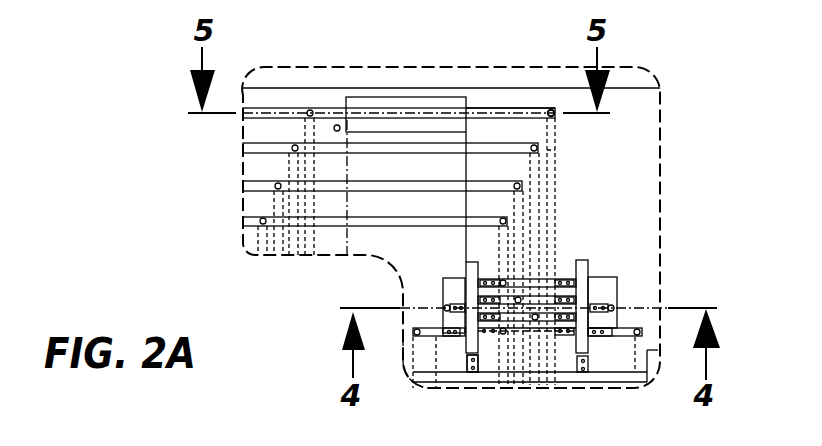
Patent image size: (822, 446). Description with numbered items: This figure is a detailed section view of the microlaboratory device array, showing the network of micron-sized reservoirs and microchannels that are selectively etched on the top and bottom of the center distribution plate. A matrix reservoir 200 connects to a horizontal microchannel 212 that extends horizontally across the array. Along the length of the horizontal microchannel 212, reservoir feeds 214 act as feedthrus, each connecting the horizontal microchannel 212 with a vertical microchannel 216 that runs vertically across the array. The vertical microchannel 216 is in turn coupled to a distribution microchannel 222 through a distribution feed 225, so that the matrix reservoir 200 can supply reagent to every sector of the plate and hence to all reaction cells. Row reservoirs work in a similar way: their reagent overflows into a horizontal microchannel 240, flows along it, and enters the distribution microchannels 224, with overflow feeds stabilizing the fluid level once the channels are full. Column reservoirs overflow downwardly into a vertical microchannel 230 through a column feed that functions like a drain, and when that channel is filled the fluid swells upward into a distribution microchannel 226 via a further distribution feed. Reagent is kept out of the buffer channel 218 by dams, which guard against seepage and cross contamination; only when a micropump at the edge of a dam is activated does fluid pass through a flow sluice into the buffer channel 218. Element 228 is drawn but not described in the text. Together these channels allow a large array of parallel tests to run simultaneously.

The matrix reservoir 200 is at (390, 97).
The horizontal microchannel 212 is at (505, 108).
The reservoir feed 214 is at (553, 109).
The vertical microchannel 216 is at (557, 153).
The buffer channel 218 is at (475, 262).
The distribution microchannel 222 is at (520, 297).
The distribution microchannel 224 is at (480, 362).
The distribution feed 225 is at (590, 277).
The distribution microchannel 226 is at (430, 326).
The cross bar 228 is at (412, 327).
The vertical microchannel 230 is at (412, 362).
The horizontal microchannel 240 is at (568, 387).